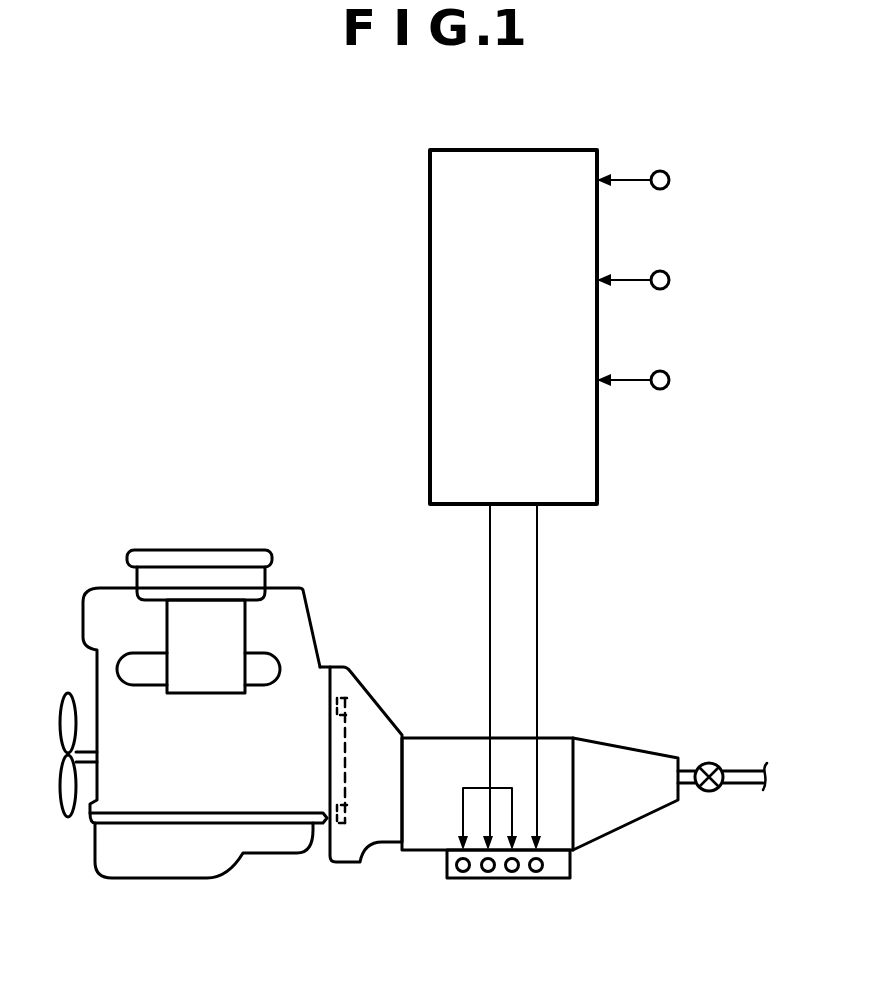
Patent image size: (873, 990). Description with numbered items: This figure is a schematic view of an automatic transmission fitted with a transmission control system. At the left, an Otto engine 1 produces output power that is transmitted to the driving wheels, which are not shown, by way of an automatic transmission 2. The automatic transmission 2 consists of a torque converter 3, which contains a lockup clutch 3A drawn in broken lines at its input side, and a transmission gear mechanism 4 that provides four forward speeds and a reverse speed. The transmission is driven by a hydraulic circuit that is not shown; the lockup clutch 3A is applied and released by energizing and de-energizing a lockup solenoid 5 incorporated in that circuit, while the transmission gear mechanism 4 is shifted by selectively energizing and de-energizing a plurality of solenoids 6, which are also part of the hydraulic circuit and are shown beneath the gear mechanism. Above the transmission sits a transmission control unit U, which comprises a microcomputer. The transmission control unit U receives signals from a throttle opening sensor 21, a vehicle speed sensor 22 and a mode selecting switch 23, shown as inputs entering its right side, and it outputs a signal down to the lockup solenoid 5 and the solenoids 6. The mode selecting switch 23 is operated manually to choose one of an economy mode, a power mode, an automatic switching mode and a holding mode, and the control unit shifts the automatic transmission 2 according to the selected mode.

The transmission control unit U is at (566, 150).
The throttle opening sensor 21 is at (669, 181).
The vehicle speed sensor 22 is at (669, 281).
The mode selecting switch 23 is at (669, 382).
The Otto engine 1 is at (189, 795).
The automatic transmission 2 is at (430, 924).
The torque converter 3 is at (355, 862).
The lockup clutch 3A is at (350, 705).
The transmission gear mechanism 4 is at (423, 850).
The lockup solenoid 5 is at (538, 878).
The solenoids 6 is at (505, 878).